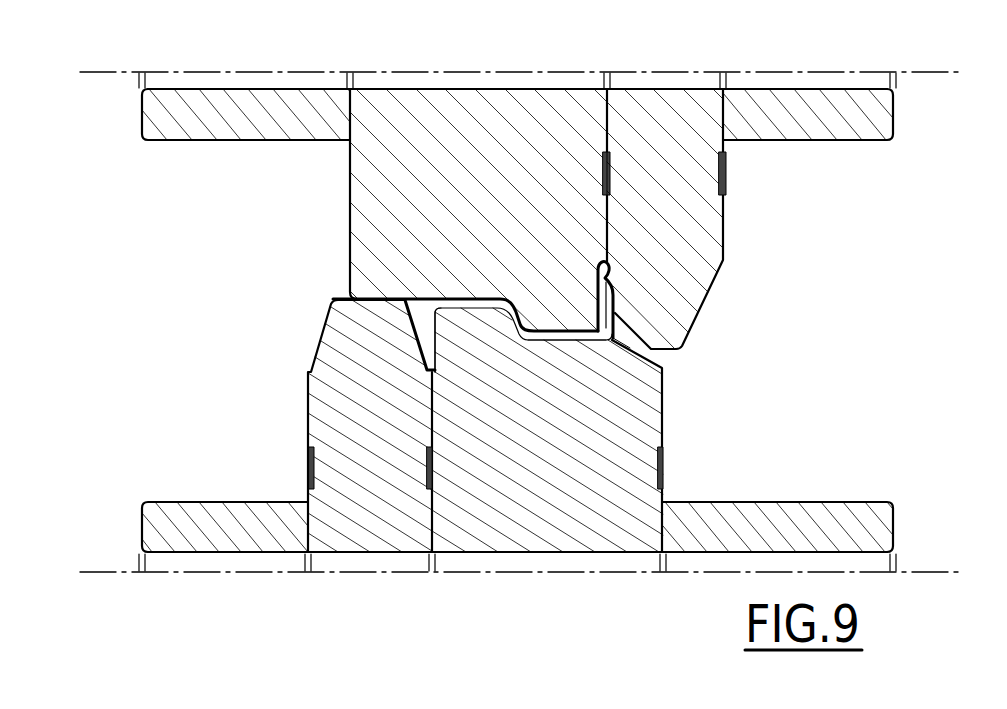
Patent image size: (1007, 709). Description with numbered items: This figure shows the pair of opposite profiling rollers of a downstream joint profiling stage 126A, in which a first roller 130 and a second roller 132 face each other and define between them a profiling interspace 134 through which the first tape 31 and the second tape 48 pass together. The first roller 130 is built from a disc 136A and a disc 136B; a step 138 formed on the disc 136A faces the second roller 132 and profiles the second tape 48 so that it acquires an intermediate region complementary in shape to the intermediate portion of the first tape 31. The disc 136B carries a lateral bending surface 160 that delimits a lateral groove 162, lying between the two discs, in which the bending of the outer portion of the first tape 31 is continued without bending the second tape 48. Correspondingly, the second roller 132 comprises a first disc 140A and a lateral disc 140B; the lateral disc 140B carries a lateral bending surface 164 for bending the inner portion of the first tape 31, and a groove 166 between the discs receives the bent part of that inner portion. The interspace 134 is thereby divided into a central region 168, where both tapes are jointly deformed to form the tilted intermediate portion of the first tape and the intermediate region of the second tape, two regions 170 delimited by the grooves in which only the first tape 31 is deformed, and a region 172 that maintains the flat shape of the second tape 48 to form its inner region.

The first roller 130 is at (98, 159).
The downstream joint profiling stage 126A is at (113, 285).
The second roller 132 is at (110, 460).
The first disc of the first roller 136A is at (412, 125).
The disc of the first roller 136B is at (687, 125).
The step 138 is at (523, 312).
The lateral groove 162 is at (600, 312).
The lateral bending surface 160 is at (614, 292).
The second tape 48 is at (387, 297).
The region for maintaining the flat shape of the second tape 172 is at (373, 296).
The groove 166 is at (433, 330).
The lateral bending surface 164 is at (428, 347).
The regions for deforming only the first tape 170 is at (428, 369).
The lateral disc of the second roller 140B is at (362, 430).
The first disc of the second roller 140A is at (589, 440).
The central region 168 is at (500, 340).
The profiling interspace 134 is at (522, 340).
The first tape 31 is at (553, 340).